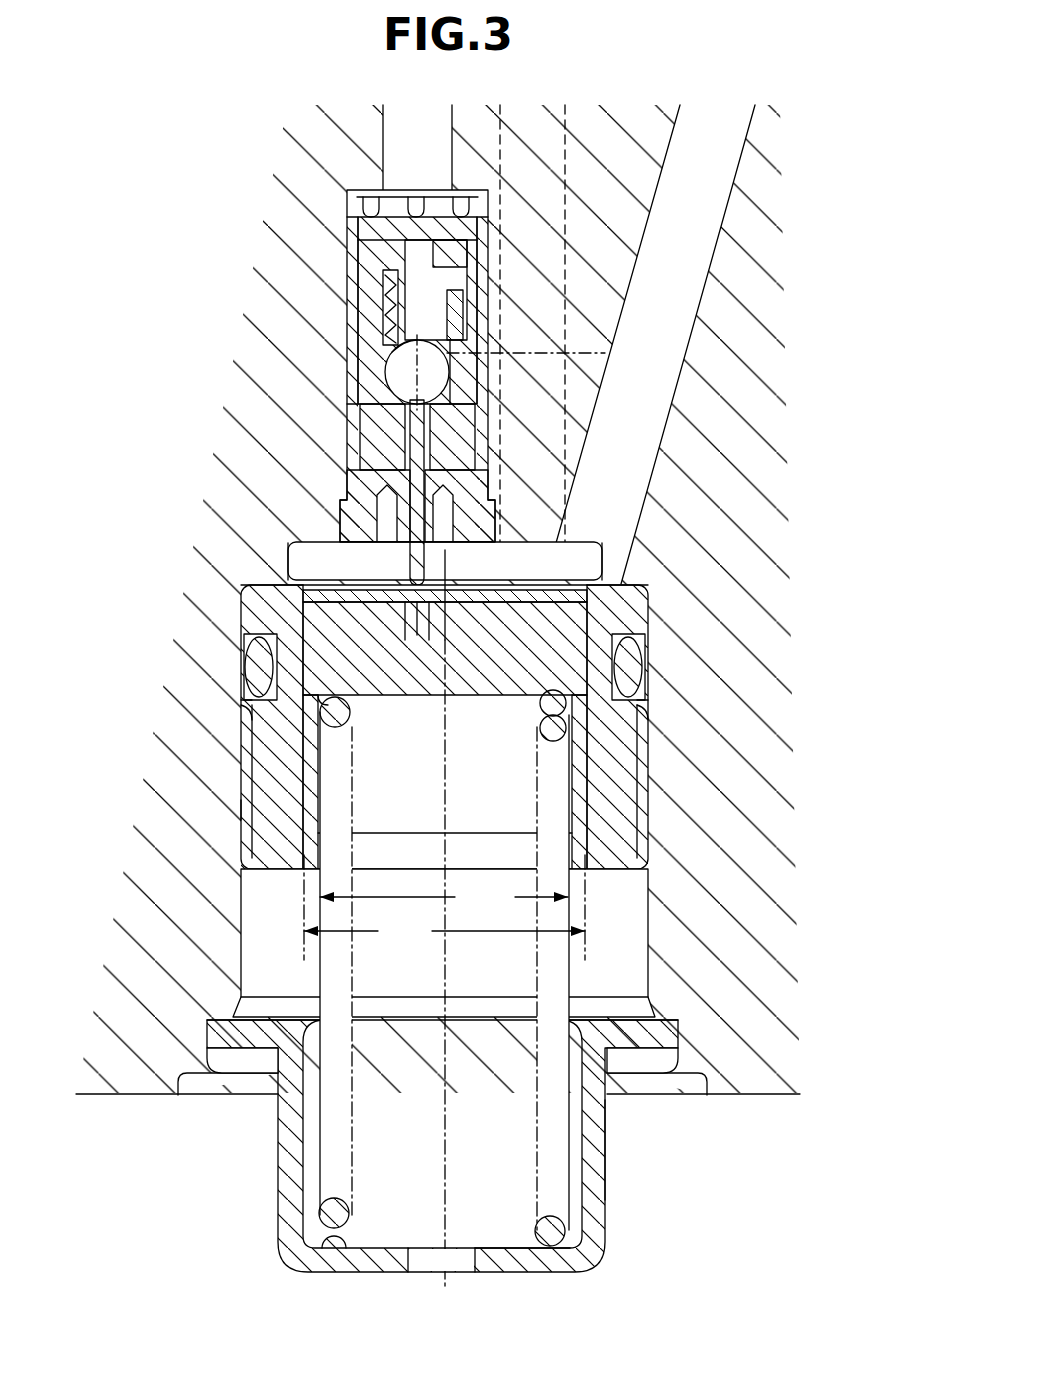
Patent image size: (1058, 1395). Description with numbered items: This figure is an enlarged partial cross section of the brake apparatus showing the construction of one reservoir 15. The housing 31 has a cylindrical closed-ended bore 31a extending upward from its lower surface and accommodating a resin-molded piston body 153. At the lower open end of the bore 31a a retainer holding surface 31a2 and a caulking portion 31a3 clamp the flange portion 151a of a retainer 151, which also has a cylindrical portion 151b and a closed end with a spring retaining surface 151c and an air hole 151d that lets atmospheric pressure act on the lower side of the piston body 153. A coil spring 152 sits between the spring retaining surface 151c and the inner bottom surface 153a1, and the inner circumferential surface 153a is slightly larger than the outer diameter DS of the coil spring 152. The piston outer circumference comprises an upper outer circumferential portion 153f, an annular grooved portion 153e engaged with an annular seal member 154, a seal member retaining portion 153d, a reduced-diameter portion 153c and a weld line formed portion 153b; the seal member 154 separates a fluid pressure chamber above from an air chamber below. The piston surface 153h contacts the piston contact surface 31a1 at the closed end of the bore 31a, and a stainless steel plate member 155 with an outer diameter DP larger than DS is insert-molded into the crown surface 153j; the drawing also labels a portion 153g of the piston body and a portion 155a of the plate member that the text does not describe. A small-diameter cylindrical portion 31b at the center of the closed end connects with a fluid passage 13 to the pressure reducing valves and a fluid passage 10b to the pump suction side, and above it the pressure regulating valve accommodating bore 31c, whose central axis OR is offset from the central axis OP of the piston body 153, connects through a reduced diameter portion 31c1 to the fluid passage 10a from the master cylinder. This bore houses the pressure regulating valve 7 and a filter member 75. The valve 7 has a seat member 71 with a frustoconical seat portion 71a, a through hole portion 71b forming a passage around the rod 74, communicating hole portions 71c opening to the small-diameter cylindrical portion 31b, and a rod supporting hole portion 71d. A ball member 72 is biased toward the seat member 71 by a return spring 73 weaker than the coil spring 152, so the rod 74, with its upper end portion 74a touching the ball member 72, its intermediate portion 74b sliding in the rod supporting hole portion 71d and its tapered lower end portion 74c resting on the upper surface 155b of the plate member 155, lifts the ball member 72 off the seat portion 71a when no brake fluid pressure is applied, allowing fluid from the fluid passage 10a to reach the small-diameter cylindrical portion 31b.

The fluid passage 10a is at (382, 150).
The fluid passage 10b is at (703, 312).
The fluid passage 13 is at (663, 166).
The housing 31 is at (722, 930).
The closed-ended bore 31a is at (245, 905).
The piston contact surface 31a1 is at (320, 591).
The retainer holding surface 31a2 is at (207, 1050).
The caulking portion 31a3 is at (207, 1080).
The small-diameter cylindrical portion 31b is at (343, 538).
The pressure regulating valve accommodating bore 31c is at (347, 222).
The reduced diameter portion 31c1 is at (375, 190).
The pressure regulating valve 7 is at (333, 438).
The seat member 71 is at (494, 465).
The seat portion 71a is at (450, 410).
The through hole portion 71b is at (478, 492).
The communicating hole portion 71c is at (448, 544).
The rod supporting hole portion 71d is at (428, 560).
The ball member 72 is at (400, 335).
The return spring 73 is at (390, 290).
The rod 74 is at (400, 368).
The upper end portion 74a is at (394, 352).
The intermediate portion 74b is at (400, 447).
The lower end portion 74c is at (410, 594).
The filter member 75 is at (468, 230).
The central axis OR is at (605, 353).
The reservoir 15 is at (236, 811).
The retainer 151 is at (610, 1122).
The flange portion 151a is at (657, 1036).
The cylindrical portion 151b is at (607, 1168).
The spring retaining surface 151c is at (500, 1242).
The air hole 151d is at (408, 1265).
The coil spring 152 is at (565, 1232).
The piston body 153 is at (652, 745).
The inner circumferential surface 153a is at (246, 852).
The inner bottom surface 153a1 is at (378, 697).
The weld line formed portion 153b is at (652, 843).
The reduced-diameter portion 153c is at (650, 770).
The seal member retaining portion 153d is at (248, 712).
The annular grooved portion 153e is at (244, 692).
The upper outer circumferential portion 153f is at (262, 640).
The top flange left 153g is at (355, 586).
The piston surface 153h is at (600, 586).
The crown surface 153j is at (612, 583).
The annular seal member 154 is at (646, 667).
The plate member 155 is at (460, 607).
The plunger bore 155a is at (387, 603).
The upper surface 155b is at (365, 590).
The central axis OP is at (440, 1093).
The outer diameter DS is at (444, 898).
The outer diameter DP is at (444, 932).